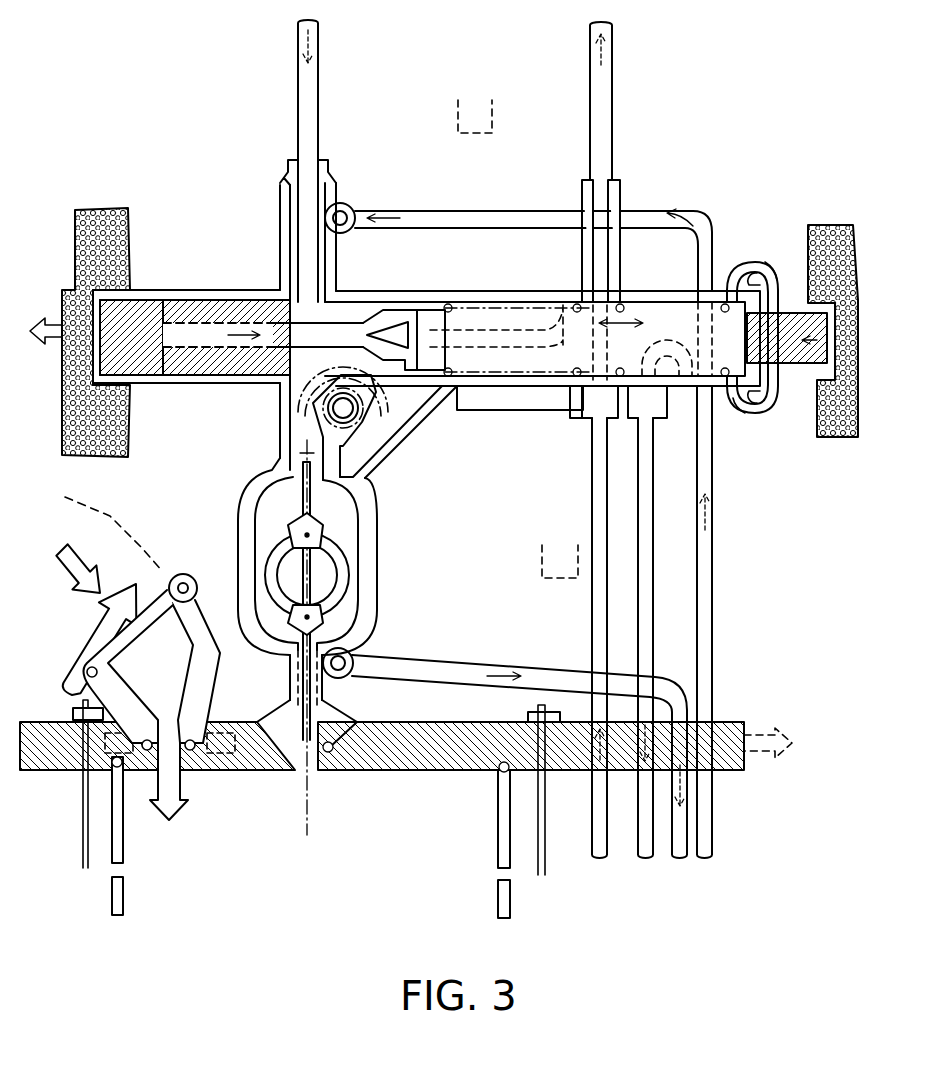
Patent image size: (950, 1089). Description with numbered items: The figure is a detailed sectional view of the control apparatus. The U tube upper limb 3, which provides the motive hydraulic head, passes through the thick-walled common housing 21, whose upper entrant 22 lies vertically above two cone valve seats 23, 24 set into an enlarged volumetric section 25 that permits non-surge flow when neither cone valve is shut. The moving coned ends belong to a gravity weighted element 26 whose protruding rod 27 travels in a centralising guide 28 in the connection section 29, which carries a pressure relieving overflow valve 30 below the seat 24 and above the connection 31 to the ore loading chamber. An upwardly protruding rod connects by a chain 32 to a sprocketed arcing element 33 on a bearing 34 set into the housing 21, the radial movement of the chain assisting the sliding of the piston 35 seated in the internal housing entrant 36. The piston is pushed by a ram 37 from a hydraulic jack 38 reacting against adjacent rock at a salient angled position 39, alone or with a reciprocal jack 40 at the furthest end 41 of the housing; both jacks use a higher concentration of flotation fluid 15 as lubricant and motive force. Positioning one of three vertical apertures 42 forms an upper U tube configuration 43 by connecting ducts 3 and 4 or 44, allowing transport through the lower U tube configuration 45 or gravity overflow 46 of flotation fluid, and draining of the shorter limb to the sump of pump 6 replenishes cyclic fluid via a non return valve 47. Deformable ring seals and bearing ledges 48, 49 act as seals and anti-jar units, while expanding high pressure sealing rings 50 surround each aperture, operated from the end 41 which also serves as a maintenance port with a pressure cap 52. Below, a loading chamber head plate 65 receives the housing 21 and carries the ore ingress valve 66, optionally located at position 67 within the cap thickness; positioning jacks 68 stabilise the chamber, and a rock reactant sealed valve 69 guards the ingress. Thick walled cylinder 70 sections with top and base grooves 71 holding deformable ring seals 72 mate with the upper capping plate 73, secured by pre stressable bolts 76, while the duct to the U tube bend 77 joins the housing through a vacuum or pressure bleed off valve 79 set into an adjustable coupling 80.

The U tube upper limb 3 is at (302, 80).
The duct 4 is at (614, 87).
The pump 6 is at (713, 835).
The flotation fluid 15 is at (178, 302).
The common housing 21 is at (280, 288).
The upper entrant 22 is at (286, 172).
The cone valve seat 23 is at (280, 478).
The cone valve seat 24 is at (337, 630).
The enlarged volumetric section 25 is at (238, 518).
The gravity weighted element 26 is at (350, 575).
The protruding rod 27 is at (318, 697).
The centralising guide 28 is at (297, 683).
The connection section 29 is at (355, 712).
The pressure relieving overflow valve 30 is at (355, 656).
The connection 31 is at (352, 764).
The chain 32 is at (300, 438).
The sprocketed arcing element 33 is at (390, 407).
The bearing 34 is at (365, 440).
The piston 35 is at (493, 390).
The internal housing entrant 36 is at (350, 297).
The ram 37 is at (384, 311).
The hydraulic jack 38 is at (140, 365).
The salient angled position 39 is at (48, 316).
The reciprocal jack 40 is at (800, 313).
The furthest end 41 is at (755, 415).
The vertical apertures 42 is at (563, 272).
The upper U tube configuration 43 is at (458, 110).
The duct 44 is at (603, 300).
The lower U tube configuration 45 is at (542, 556).
The gravity overflow 46 is at (670, 340).
The non return valve 47 is at (352, 208).
The ring seals and bearing ledges 48 is at (447, 305).
The ring seals and bearing ledges 49 is at (753, 275).
The expanding high pressure sealing rings 50 is at (576, 378).
The pressure cap 52 is at (774, 400).
The loading chamber head plate 65 is at (223, 752).
The ore ingress valve 66 is at (137, 640).
The position 67 is at (103, 753).
The positioning jacks 68 is at (785, 735).
The rock reactant sealed valve 69 is at (64, 592).
The thick walled cylinder 70 is at (498, 900).
The top and base grooves 71 is at (465, 815).
The deformable ring seals 72 is at (498, 772).
The upper capping plate 73 is at (462, 732).
The pre stressable bolts 76 is at (545, 850).
The U tube bend 77 is at (655, 642).
The vacuum or pressure bleed off valve 79 is at (580, 420).
The adjustable coupling 80 is at (660, 420).